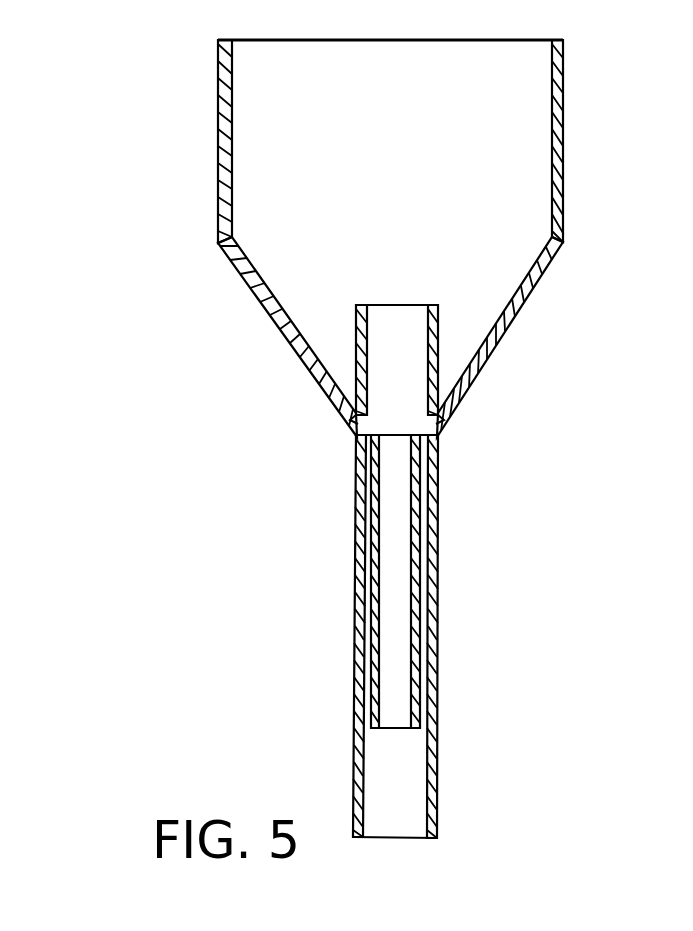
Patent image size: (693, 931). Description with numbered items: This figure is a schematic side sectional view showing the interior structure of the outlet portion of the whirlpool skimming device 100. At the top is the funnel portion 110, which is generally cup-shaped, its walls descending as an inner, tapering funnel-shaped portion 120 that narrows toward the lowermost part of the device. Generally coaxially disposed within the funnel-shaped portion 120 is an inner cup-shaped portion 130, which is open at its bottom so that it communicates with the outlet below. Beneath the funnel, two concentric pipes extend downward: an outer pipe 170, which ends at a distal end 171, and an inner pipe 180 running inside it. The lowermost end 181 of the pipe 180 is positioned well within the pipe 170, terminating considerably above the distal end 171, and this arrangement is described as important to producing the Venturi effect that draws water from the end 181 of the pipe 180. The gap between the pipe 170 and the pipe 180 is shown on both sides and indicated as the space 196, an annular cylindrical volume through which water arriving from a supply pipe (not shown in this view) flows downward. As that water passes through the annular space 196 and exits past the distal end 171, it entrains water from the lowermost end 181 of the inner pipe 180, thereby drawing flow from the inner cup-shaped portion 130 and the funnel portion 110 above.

The whirlpool skimming device 100 is at (193, 168).
The funnel portion 110 is at (565, 75).
The inner tapering funnel-shaped portion 120 is at (540, 282).
The inner cup-shaped portion 130 is at (352, 317).
The pipe 170 is at (355, 513).
The distal end 171 is at (402, 840).
The pipe 180 is at (372, 645).
The lowermost end 181 is at (390, 735).
The space 196 is at (372, 576).